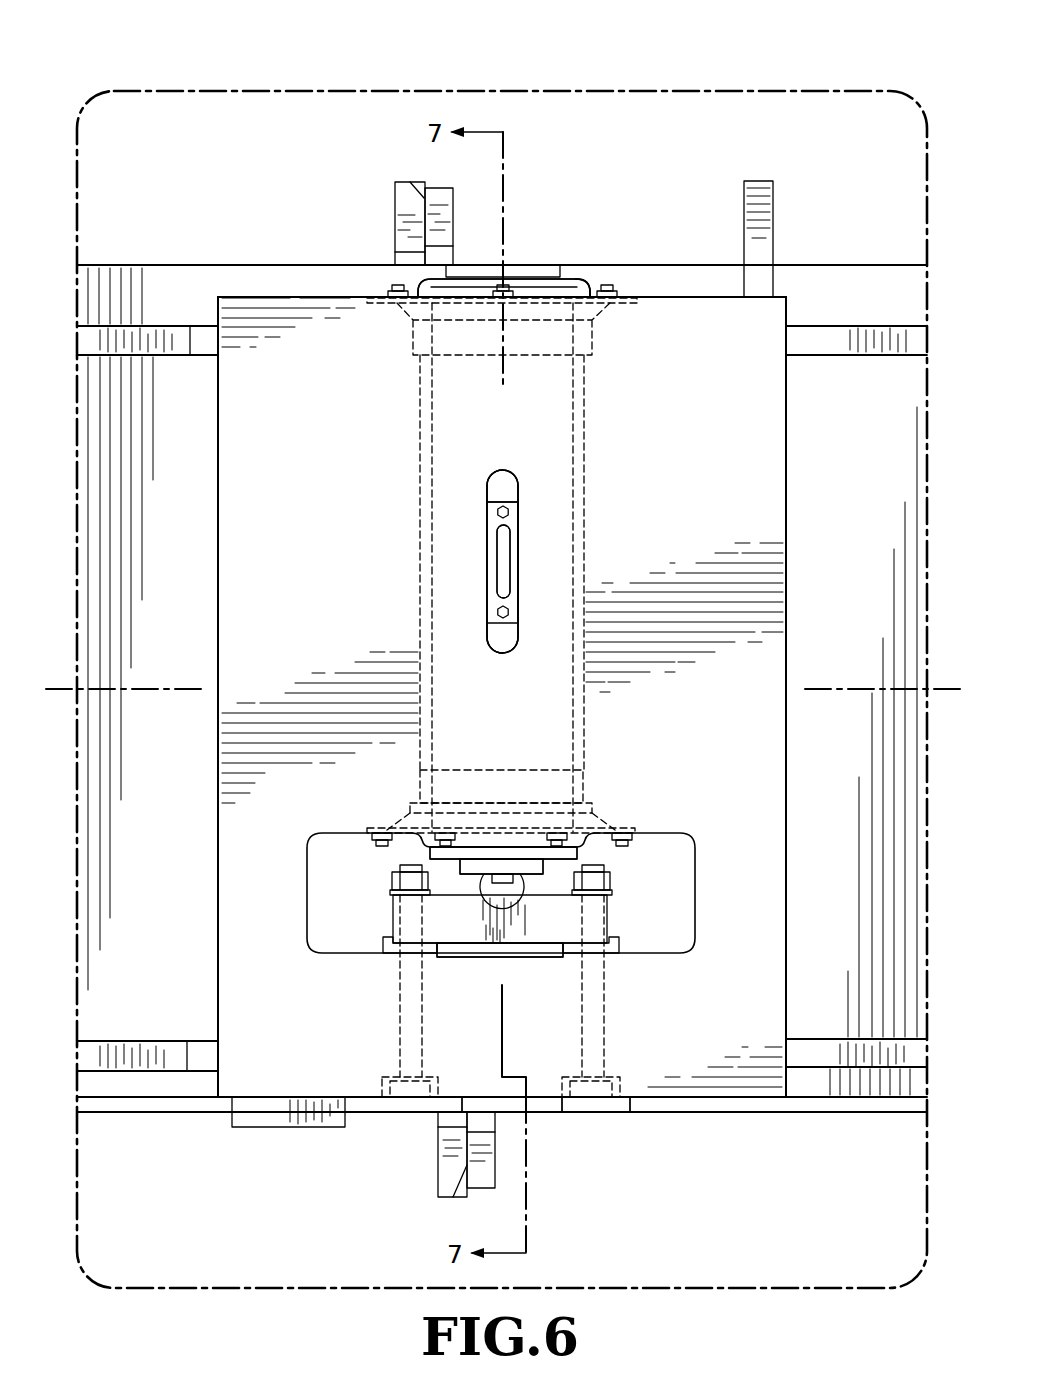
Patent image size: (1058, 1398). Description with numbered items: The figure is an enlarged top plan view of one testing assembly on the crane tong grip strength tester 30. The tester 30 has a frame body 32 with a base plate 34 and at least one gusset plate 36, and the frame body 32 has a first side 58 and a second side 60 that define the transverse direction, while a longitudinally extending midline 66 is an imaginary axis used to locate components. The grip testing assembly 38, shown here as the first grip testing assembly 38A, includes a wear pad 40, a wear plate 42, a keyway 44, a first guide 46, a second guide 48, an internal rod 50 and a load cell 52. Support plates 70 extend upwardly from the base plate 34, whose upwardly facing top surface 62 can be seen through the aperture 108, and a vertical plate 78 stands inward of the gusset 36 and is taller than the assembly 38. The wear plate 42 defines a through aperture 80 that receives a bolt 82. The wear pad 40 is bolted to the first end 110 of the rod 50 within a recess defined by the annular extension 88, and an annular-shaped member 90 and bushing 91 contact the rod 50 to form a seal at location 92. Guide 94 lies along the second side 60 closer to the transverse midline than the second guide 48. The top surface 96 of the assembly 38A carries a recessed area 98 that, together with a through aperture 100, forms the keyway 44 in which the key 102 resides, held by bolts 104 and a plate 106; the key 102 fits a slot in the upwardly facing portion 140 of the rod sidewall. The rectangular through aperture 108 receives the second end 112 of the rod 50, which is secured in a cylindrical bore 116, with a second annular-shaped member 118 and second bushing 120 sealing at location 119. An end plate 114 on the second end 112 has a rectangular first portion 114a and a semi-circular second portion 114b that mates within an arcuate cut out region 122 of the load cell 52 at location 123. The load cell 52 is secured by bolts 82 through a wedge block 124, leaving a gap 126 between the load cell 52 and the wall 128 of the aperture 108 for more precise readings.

The crane tong grip strength tester 30 is at (752, 58).
The frame body 32 is at (866, 255).
The base plate 34 is at (216, 258).
The gusset plate 36 is at (162, 332).
The grip testing assembly 38 is at (735, 470).
The first grip testing assembly 38A is at (735, 470).
The wear pad 40 is at (533, 265).
The wear plate 42 is at (544, 1105).
The keyway 44 is at (492, 488).
The first guide 46 is at (445, 1170).
The second guide 48 is at (402, 197).
The internal rod 50 is at (433, 437).
The load cell 52 is at (377, 907).
The first side 58 is at (153, 1142).
The second side 60 is at (293, 250).
The upwardly facing top surface 62 is at (502, 681).
The longitudinally extending midline 66 is at (146, 692).
The support plate 70 is at (840, 345).
The vertical plate 78 is at (250, 1120).
The through aperture 80 is at (607, 1105).
The bolt 82 is at (405, 1040).
The annular extension 88 is at (573, 283).
The first end of rod 110 is at (573, 283).
The annular-shaped member 90 is at (620, 303).
The bushing 91 is at (420, 338).
The seal location 92 is at (598, 273).
The guide 94 is at (773, 203).
The upwardly facing top surface 96 is at (502, 697).
The recessed area 98 is at (492, 488).
The through aperture 100 is at (493, 547).
The key 102 is at (500, 568).
The bolts 104 is at (497, 512).
The plate 106 is at (513, 520).
The aperture 108 is at (667, 850).
The second end of rod 112 is at (430, 853).
The end plate 114 is at (505, 840).
The first portion of end plate 114a is at (505, 840).
The second portion of end plate 114b is at (523, 882).
The cylindrical bore 116 is at (420, 395).
The second annular-shaped member 118 is at (380, 832).
The seal location 119 is at (590, 851).
The second bushing 120 is at (580, 782).
The arcuate cut out region 122 is at (497, 897).
The mating engagement location 123 is at (507, 897).
The wedge block 124 is at (390, 952).
The gap 126 is at (549, 950).
The wall 128 is at (497, 903).
The upwardly facing portion 140 is at (528, 552).